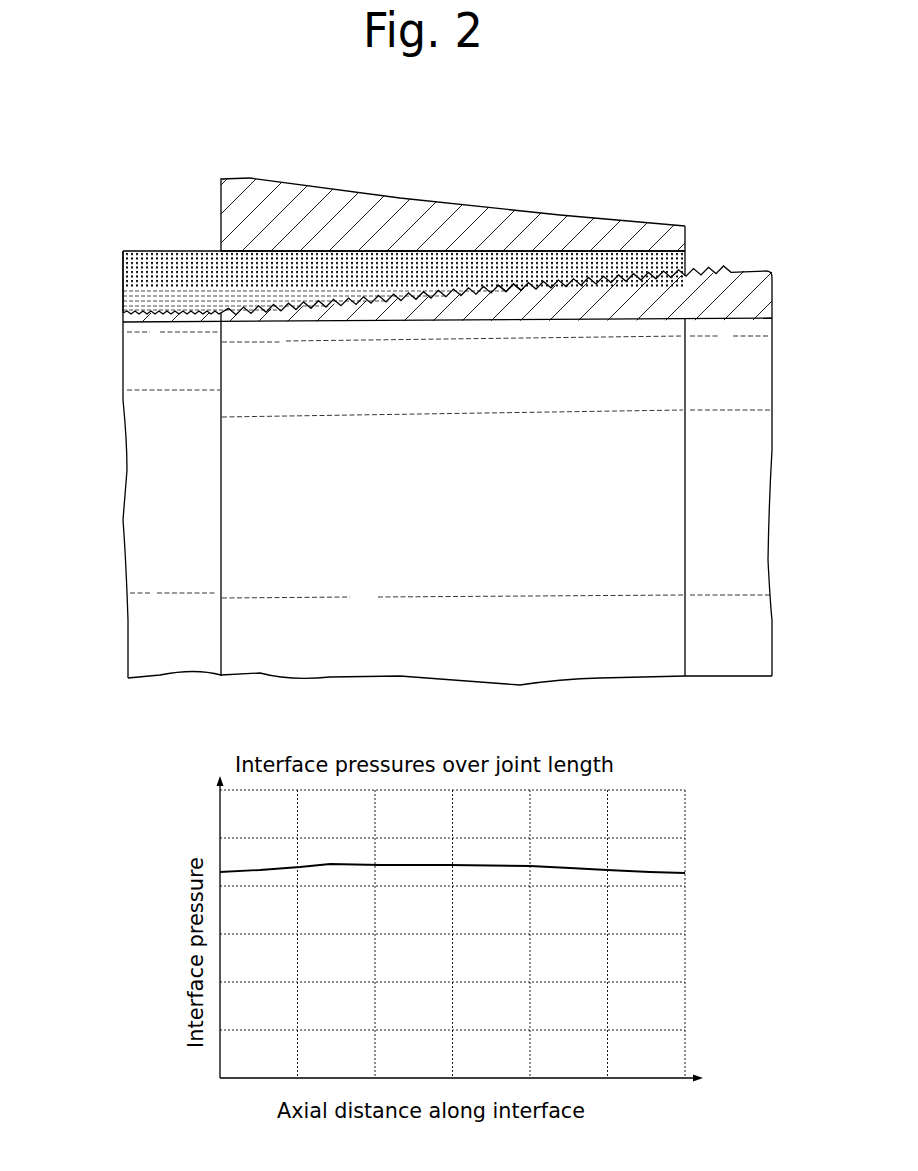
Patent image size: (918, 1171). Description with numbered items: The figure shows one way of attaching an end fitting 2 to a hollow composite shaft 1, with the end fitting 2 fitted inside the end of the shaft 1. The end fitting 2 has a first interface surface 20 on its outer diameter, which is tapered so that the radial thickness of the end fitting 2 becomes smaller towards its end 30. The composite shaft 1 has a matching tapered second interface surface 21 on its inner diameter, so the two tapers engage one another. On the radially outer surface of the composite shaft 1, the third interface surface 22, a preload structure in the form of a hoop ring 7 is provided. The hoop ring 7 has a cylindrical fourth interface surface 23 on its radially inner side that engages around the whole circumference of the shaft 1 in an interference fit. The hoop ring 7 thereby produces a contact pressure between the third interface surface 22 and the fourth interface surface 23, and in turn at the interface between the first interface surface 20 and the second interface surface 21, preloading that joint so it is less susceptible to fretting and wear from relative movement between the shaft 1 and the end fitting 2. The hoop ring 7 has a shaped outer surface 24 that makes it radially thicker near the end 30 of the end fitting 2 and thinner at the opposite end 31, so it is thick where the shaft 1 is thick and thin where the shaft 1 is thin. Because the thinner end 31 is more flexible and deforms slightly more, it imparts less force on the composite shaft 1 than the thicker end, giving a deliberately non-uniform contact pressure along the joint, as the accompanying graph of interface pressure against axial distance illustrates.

The composite shaft 1 is at (150, 284).
The end fitting 2 is at (269, 320).
The hoop ring 7 is at (253, 205).
The first interface surface 20 is at (510, 297).
The second interface surface 21 is at (528, 290).
The third interface surface 22 is at (400, 255).
The fourth interface surface 23 is at (356, 251).
The outer surface 24 is at (448, 202).
The end 30 is at (221, 318).
The thinner end 31 is at (688, 236).